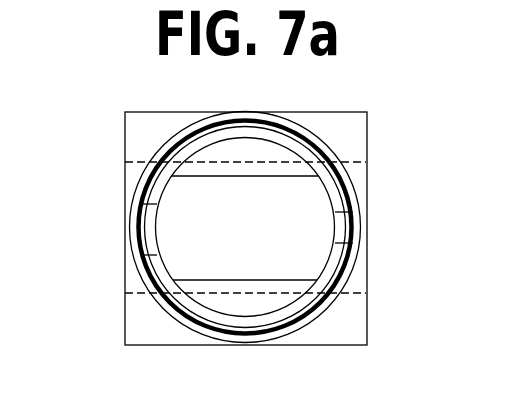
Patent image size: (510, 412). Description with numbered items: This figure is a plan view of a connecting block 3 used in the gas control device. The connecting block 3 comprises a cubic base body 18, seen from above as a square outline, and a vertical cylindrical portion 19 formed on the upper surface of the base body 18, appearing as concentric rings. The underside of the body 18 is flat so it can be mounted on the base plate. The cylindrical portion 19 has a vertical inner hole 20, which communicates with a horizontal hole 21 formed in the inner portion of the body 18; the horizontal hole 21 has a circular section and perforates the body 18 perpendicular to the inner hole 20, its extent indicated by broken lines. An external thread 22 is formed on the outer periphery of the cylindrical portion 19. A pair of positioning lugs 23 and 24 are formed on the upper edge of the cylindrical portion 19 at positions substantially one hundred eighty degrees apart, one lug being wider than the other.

The connecting block 3 is at (163, 108).
The base body 18 is at (175, 346).
The cylindrical portion 19 is at (290, 313).
The inner hole 20 is at (315, 200).
The horizontal hole 21 is at (264, 163).
The external thread 22 is at (150, 170).
The positioning lug 23 is at (145, 238).
The positioning lug 24 is at (353, 243).